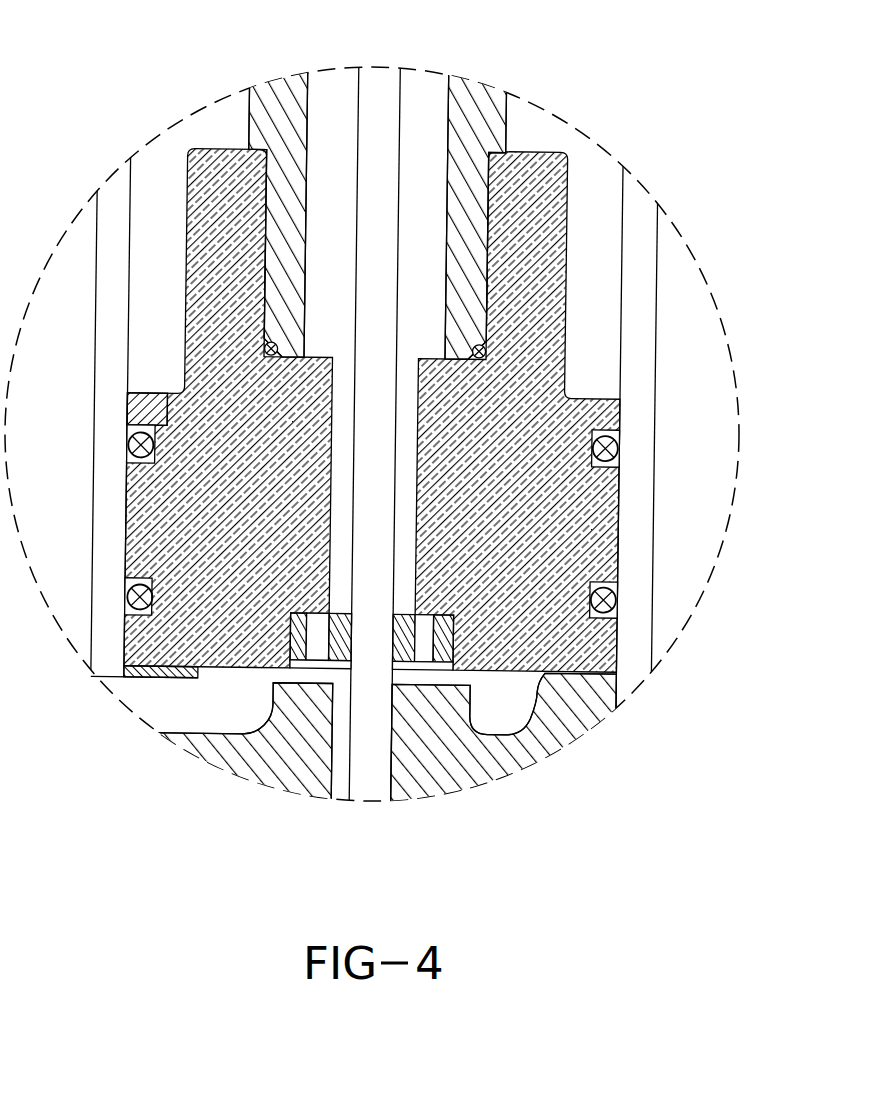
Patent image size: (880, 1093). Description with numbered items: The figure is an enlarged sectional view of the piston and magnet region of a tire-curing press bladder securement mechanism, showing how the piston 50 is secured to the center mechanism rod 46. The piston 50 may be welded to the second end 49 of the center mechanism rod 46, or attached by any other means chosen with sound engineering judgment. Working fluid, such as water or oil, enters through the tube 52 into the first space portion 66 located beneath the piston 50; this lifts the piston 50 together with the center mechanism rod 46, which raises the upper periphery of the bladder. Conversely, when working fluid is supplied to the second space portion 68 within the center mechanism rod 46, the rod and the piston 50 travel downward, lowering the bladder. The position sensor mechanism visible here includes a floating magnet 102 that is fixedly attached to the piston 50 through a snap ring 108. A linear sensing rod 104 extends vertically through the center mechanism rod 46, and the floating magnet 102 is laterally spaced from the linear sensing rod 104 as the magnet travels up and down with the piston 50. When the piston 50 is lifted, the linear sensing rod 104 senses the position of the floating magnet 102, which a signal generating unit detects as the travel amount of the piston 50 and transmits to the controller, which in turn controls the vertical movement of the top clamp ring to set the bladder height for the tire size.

The center mechanism rod 46 is at (247, 113).
The second end 49 is at (258, 141).
The piston 50 is at (167, 412).
The tube 52 is at (163, 720).
The first space portion 66 is at (321, 681).
The second space portion 68 is at (600, 186).
The floating magnet 102 is at (400, 647).
The linear sensing rod 104 is at (357, 84).
The snap ring 108 is at (447, 667).